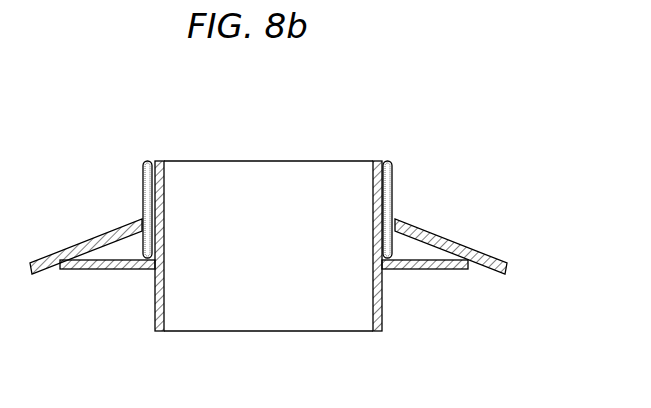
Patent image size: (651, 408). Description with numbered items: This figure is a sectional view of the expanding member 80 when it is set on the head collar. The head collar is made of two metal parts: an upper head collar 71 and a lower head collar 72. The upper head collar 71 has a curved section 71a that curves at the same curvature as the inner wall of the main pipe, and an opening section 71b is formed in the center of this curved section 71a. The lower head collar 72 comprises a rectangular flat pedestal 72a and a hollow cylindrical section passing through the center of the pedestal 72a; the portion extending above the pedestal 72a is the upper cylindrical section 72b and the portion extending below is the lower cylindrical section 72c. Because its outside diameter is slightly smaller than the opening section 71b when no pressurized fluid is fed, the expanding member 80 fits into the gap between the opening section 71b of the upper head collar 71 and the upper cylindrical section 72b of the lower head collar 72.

The upper head collar 71 is at (313, 220).
The curved section 71a is at (300, 220).
The opening section 71b is at (396, 220).
The lower head collar 72 is at (467, 270).
The pedestal 72a is at (78, 270).
The upper cylindrical section 72b is at (378, 160).
The lower cylindrical section 72c is at (156, 308).
The expanding member 80 is at (389, 188).